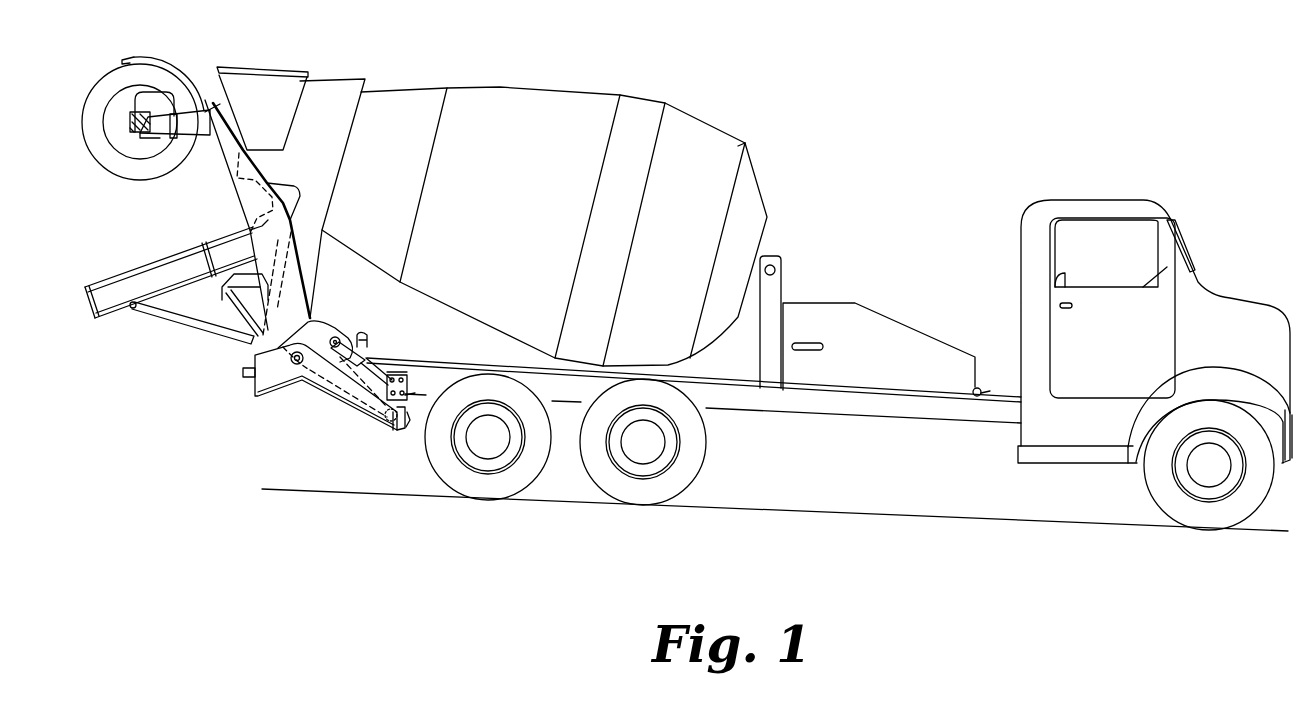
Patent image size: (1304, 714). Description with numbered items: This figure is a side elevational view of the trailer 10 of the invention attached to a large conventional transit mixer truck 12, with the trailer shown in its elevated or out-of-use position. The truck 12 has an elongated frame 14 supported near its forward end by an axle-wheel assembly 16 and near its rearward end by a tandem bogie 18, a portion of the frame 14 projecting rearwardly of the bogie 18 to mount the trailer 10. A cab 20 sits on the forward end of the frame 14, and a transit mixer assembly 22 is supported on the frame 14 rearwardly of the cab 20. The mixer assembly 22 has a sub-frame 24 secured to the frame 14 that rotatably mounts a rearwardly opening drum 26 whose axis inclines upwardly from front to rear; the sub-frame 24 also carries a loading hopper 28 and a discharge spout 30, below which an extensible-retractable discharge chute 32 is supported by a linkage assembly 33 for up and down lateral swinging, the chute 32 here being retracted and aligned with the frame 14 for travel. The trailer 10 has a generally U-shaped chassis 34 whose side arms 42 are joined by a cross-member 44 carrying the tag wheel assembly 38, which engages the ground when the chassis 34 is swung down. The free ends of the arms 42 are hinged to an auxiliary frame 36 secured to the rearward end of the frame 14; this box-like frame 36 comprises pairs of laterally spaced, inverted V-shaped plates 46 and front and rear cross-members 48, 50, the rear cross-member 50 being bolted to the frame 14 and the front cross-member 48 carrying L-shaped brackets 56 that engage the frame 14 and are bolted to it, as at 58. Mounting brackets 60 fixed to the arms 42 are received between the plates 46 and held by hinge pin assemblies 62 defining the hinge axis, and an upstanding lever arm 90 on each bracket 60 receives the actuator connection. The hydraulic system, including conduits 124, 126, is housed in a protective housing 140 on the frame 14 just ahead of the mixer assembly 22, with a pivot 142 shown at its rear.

The trailer 10 is at (315, 382).
The transit mixer truck 12 is at (829, 352).
The frame 14 is at (813, 413).
The axle-wheel assembly 16 is at (1162, 494).
The bogie 18 is at (599, 479).
The cab 20 is at (1200, 283).
The transit mixer assembly 22 is at (557, 222).
The sub-frame 24 is at (778, 287).
The drum 26 is at (750, 147).
The loading hopper 28 is at (302, 83).
The discharge spout 30 is at (240, 218).
The discharge chute 32 is at (150, 260).
The linkage assembly 33 is at (227, 345).
The chassis 34 is at (243, 223).
The auxiliary frame 36 is at (407, 430).
The tag wheel assembly 38 is at (176, 68).
The side arms 42 is at (225, 163).
The cross-member 44 is at (203, 112).
The plates 46 is at (317, 392).
The front cross-member 48 is at (395, 435).
The rear cross-member 50 is at (247, 385).
The L-shaped brackets 56 is at (405, 385).
The bolts 58 is at (401, 378).
The mounting brackets 60 is at (318, 313).
The hinge pin assemblies 62 is at (295, 365).
The lever arm 90 is at (332, 330).
The conduit 124 is at (370, 338).
The conduit 126 is at (408, 392).
The protective housing 140 is at (877, 320).
The pivot pin 142 is at (1013, 377).